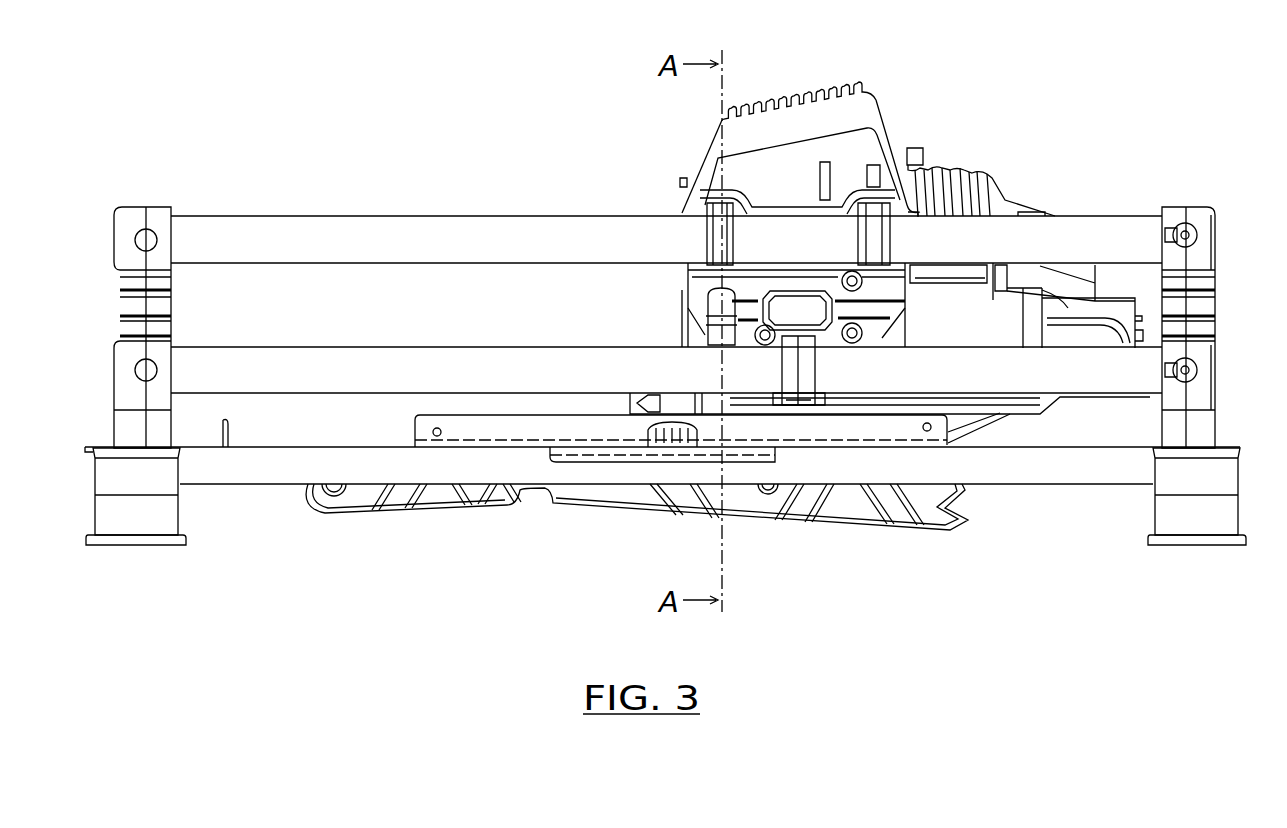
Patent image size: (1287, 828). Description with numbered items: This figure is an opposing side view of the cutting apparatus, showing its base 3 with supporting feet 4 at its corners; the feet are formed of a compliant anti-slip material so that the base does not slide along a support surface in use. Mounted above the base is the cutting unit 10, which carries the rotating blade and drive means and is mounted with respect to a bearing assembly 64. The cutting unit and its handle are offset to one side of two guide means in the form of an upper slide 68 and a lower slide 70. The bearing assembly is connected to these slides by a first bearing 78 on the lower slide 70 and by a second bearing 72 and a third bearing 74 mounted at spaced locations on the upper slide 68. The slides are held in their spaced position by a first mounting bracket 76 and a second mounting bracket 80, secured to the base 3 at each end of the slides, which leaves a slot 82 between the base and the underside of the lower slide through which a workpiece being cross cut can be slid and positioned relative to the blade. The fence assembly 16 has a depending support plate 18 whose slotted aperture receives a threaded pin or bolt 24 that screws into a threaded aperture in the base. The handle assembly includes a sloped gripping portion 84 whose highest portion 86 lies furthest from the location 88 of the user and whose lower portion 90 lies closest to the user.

The base 3 is at (248, 472).
The supporting feet 4 is at (143, 515).
The cutting unit 10 is at (975, 250).
The fence assembly 16 is at (838, 430).
The support plate 18 is at (580, 458).
The threaded pin or bolt 24 is at (672, 448).
The bearing assembly 64 is at (760, 280).
The upper slide 68 is at (1095, 228).
The lower slide 70 is at (1032, 380).
The second bearing 72 is at (708, 233).
The third bearing 74 is at (918, 232).
The first mounting bracket 76 is at (130, 328).
The first bearing 78 is at (790, 410).
The second mounting bracket 80 is at (1188, 288).
The slot 82 is at (345, 430).
The gripping portion 84 is at (840, 100).
The highest portion 86 is at (880, 113).
The location of the person 88 is at (78, 484).
The lower portion 90 is at (715, 128).